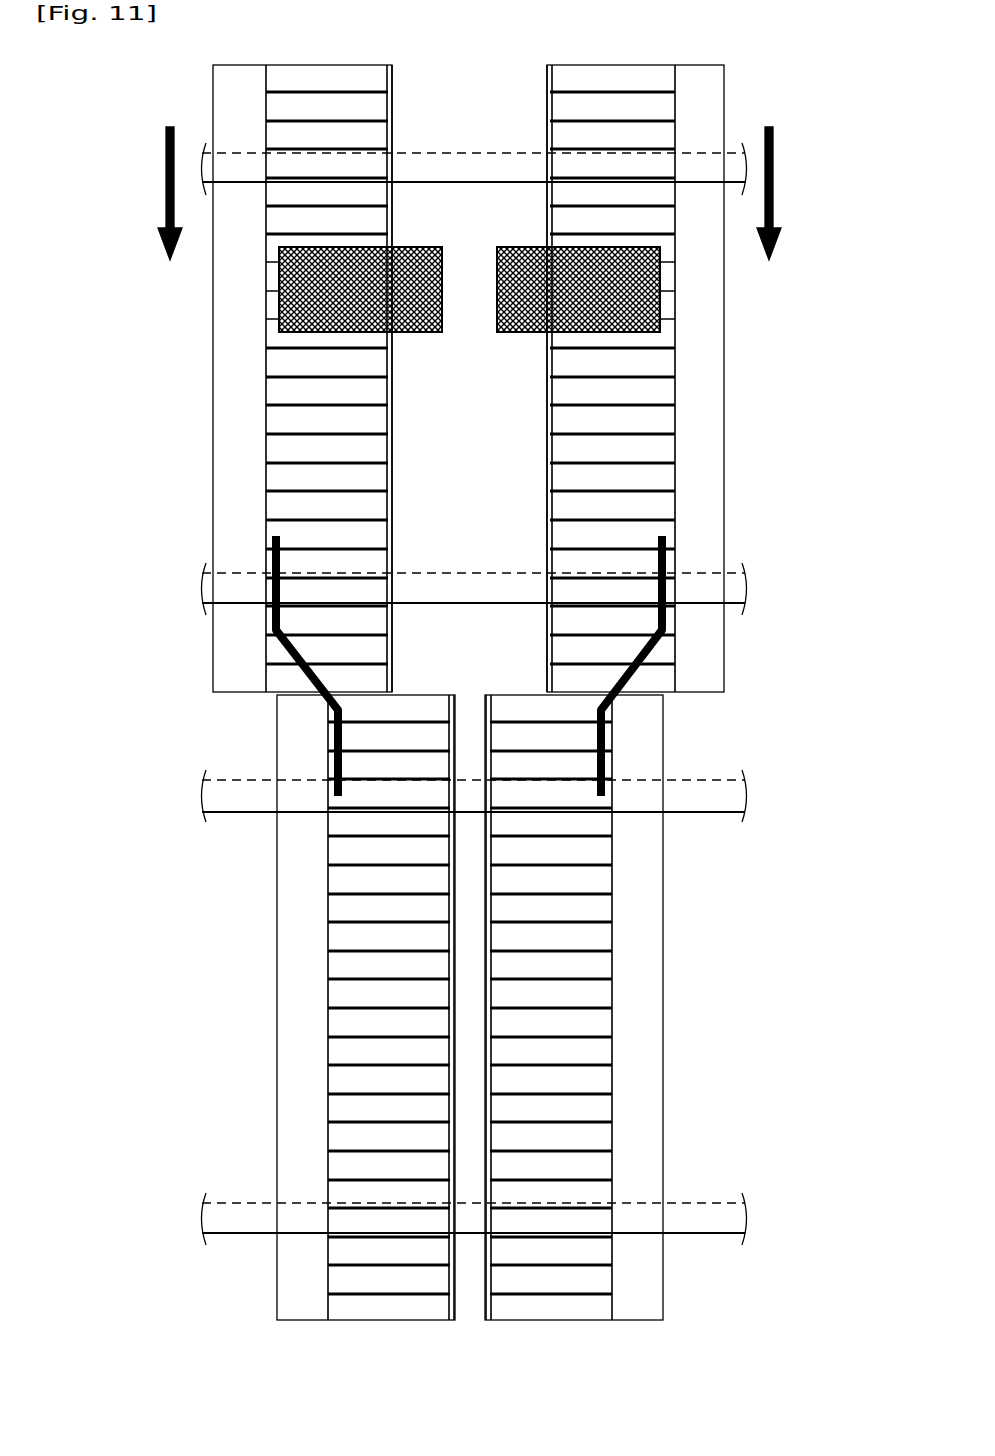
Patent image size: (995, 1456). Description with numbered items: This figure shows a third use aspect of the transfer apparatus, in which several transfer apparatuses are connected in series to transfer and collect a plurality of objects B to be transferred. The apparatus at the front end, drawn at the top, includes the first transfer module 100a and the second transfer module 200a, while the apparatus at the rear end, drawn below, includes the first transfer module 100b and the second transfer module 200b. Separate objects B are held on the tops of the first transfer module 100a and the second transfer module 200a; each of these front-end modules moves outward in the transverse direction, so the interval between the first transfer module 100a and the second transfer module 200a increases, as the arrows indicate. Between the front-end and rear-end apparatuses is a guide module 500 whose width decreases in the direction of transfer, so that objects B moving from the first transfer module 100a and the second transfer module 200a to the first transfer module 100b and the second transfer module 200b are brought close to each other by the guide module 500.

The second transfer module 200a is at (230, 438).
The first transfer module 100a is at (710, 440).
The second transfer module 200b is at (292, 1011).
The first transfer module 100b is at (650, 1011).
The guide module 500 is at (335, 738).
The object to be transferred B is at (420, 333).